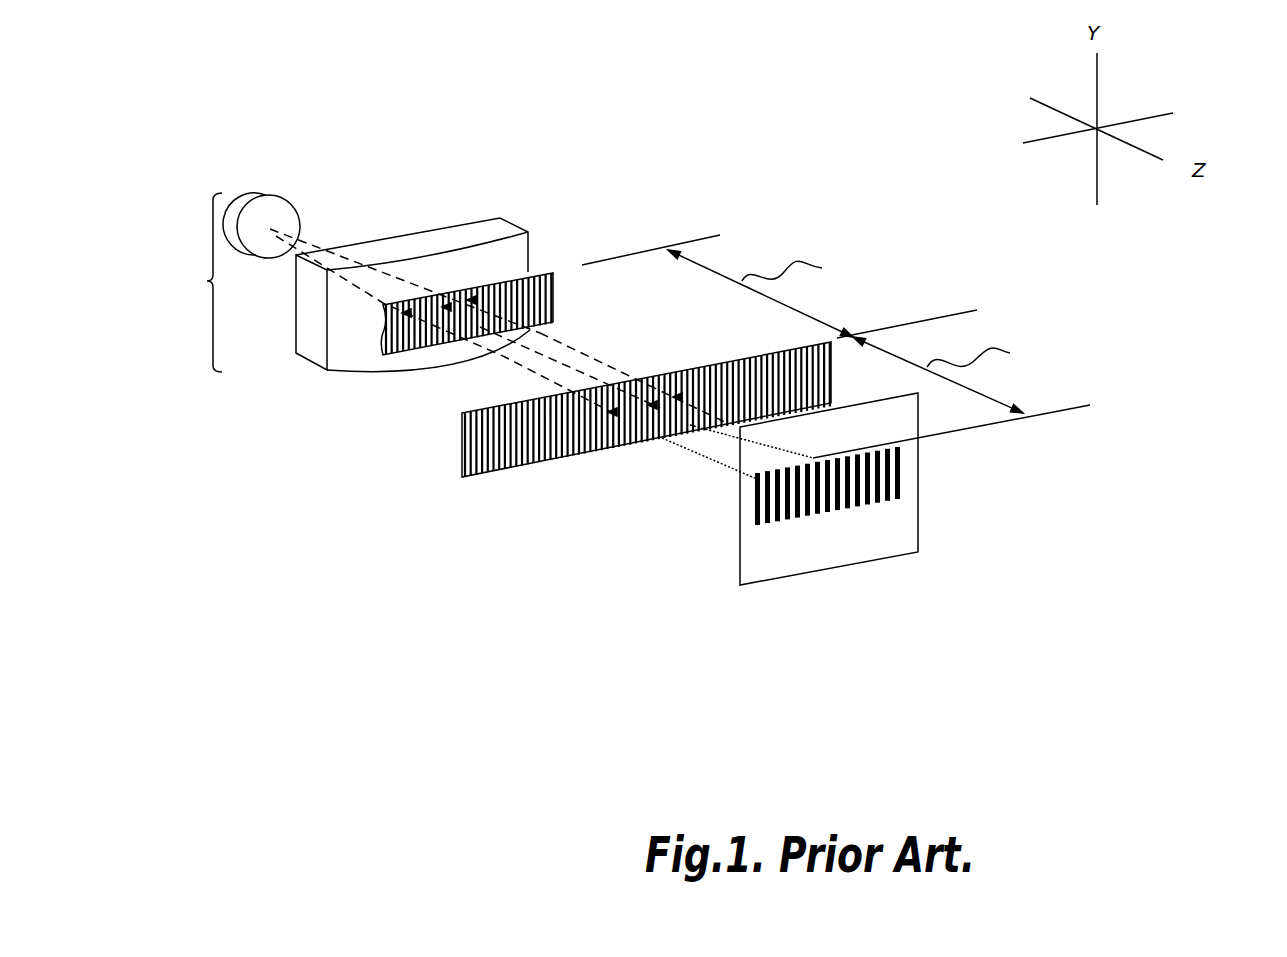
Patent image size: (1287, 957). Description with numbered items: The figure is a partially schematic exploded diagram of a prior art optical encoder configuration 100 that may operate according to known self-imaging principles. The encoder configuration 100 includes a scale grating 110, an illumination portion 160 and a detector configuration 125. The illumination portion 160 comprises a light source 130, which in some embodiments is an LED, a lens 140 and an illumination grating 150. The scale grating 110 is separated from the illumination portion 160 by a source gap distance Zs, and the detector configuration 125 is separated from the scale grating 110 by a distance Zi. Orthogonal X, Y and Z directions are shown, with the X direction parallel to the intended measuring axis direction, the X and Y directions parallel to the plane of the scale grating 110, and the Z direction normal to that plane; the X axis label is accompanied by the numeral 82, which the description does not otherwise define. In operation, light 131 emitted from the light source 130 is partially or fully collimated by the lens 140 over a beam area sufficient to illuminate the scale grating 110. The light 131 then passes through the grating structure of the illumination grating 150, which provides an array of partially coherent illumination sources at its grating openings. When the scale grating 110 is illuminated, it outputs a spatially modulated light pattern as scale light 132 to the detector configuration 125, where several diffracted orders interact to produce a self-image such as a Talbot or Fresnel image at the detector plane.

The encoder configuration 100 is at (1055, 273).
The scale grating 110 is at (712, 360).
The detector configuration 125 is at (773, 582).
The light source 130 is at (282, 258).
The light 131 is at (305, 238).
The scale light 132 is at (693, 463).
The lens 140 is at (313, 308).
The illumination grating 150 is at (381, 341).
The illumination portion 160 is at (207, 281).
The X axis measuring direction 82 is at (1127, 123).